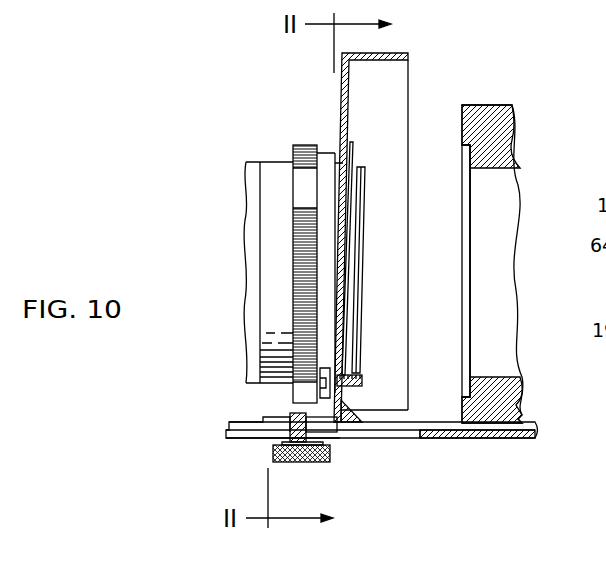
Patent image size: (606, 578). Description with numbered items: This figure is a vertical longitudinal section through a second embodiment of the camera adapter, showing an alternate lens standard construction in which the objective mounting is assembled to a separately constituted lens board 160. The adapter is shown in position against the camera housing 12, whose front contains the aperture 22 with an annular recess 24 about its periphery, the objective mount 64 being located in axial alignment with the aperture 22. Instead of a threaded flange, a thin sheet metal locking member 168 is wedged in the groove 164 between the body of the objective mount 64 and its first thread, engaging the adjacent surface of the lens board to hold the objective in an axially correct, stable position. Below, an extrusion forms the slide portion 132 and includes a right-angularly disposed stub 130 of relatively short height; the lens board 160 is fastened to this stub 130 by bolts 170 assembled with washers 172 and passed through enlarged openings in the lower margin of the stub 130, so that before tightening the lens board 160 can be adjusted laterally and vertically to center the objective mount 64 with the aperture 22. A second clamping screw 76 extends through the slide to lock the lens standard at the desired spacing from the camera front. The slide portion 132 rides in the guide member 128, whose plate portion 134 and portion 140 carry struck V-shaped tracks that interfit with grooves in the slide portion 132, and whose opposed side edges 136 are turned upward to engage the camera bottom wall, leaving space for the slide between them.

The camera housing 12 is at (500, 105).
The aperture 22 is at (508, 248).
The annular recess 24 is at (462, 235).
The objective mount 64 is at (260, 271).
The second clamping screw 76 is at (305, 462).
The guide member 128 is at (524, 445).
The stub 130 is at (346, 413).
The slide portion 132 is at (535, 427).
The plate portion 134 is at (465, 442).
The side edges 136 is at (237, 421).
The guide member portion 140 is at (233, 439).
The lens board 160 is at (342, 101).
The groove 164 is at (358, 185).
The locking member 168 is at (355, 157).
The bolts 170 is at (362, 382).
The washers 172 is at (332, 360).